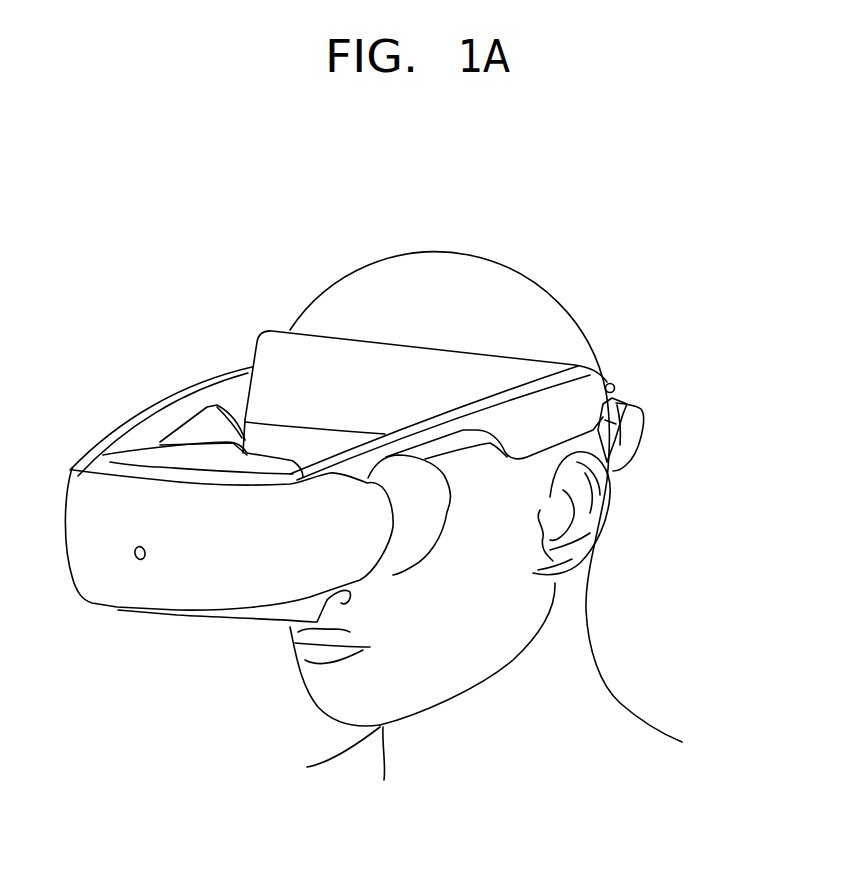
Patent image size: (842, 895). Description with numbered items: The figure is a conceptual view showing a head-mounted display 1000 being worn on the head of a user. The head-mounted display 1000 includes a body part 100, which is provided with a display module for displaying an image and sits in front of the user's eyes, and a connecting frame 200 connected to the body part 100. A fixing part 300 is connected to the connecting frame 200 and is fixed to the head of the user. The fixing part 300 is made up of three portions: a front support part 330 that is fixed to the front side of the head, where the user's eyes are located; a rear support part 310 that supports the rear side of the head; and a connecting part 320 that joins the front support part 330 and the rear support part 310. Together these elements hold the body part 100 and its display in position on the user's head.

The head-mounted display 1000 is at (188, 319).
The body part 100 is at (202, 577).
The connecting frame 200 is at (176, 405).
The fixing part 300 is at (707, 265).
The rear support part 310 is at (632, 433).
The connecting part 320 is at (607, 468).
The front support part 330 is at (467, 372).